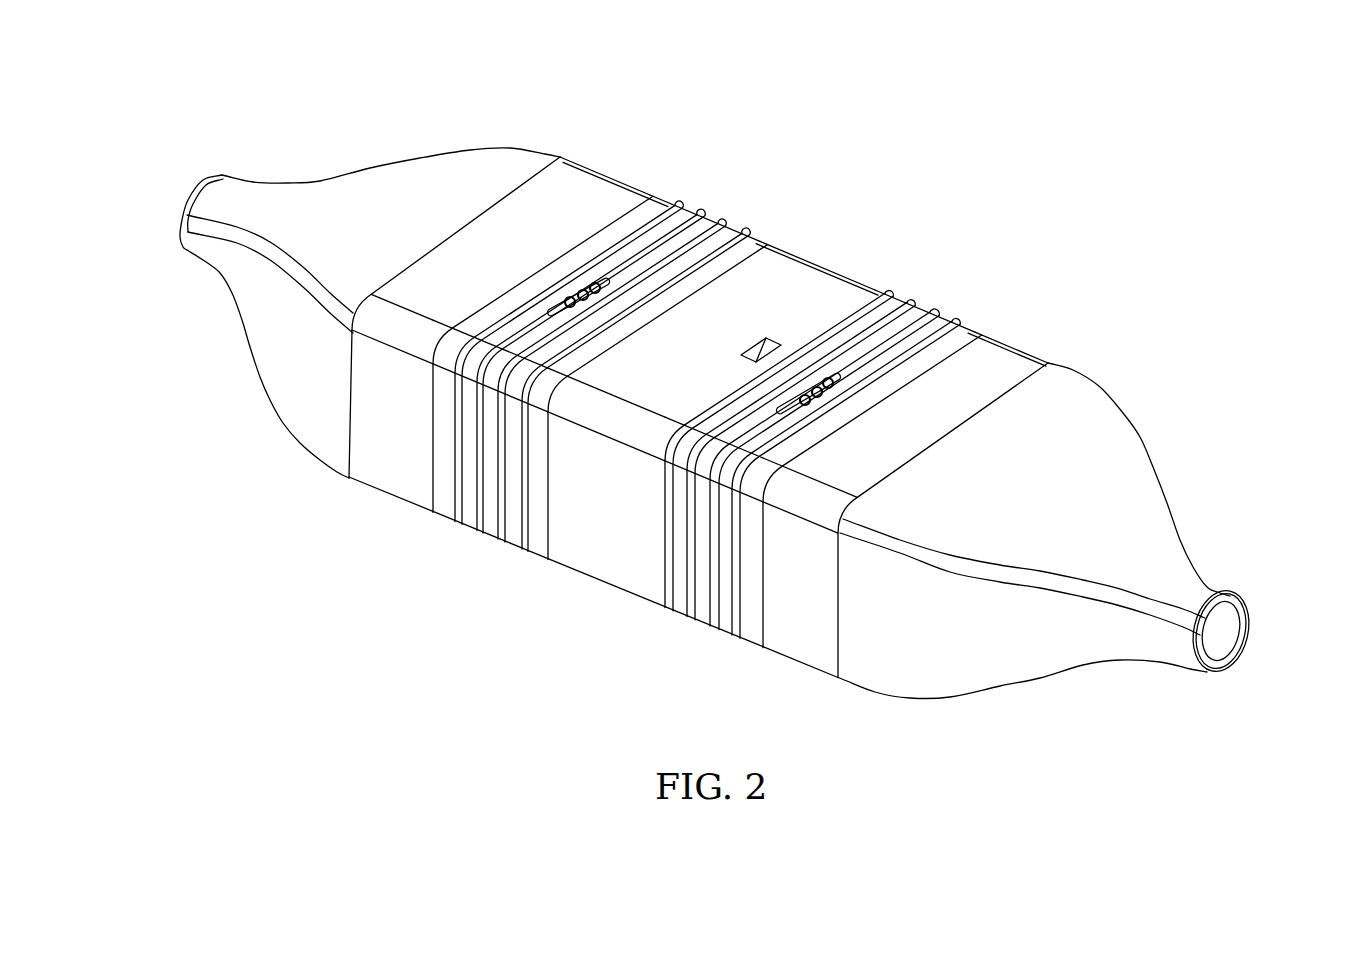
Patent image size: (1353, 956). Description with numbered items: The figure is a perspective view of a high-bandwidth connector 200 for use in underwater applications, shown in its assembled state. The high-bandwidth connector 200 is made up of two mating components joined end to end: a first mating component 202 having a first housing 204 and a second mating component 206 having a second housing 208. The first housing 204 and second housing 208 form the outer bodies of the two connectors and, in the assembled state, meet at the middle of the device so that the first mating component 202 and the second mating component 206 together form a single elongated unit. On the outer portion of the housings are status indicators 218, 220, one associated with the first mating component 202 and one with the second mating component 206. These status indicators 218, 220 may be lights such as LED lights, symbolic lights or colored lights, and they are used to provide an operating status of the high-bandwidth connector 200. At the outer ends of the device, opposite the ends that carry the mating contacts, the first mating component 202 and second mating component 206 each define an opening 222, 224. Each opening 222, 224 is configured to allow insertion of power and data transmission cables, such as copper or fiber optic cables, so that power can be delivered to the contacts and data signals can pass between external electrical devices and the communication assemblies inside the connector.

The high-bandwidth connector 200 is at (191, 106).
The first mating component 202 is at (733, 223).
The first housing 204 is at (587, 184).
The second mating component 206 is at (607, 570).
The second housing 208 is at (797, 650).
The status indicator 218 is at (556, 282).
The status indicator 220 is at (835, 408).
The opening 222 is at (185, 203).
The opening 224 is at (1207, 650).